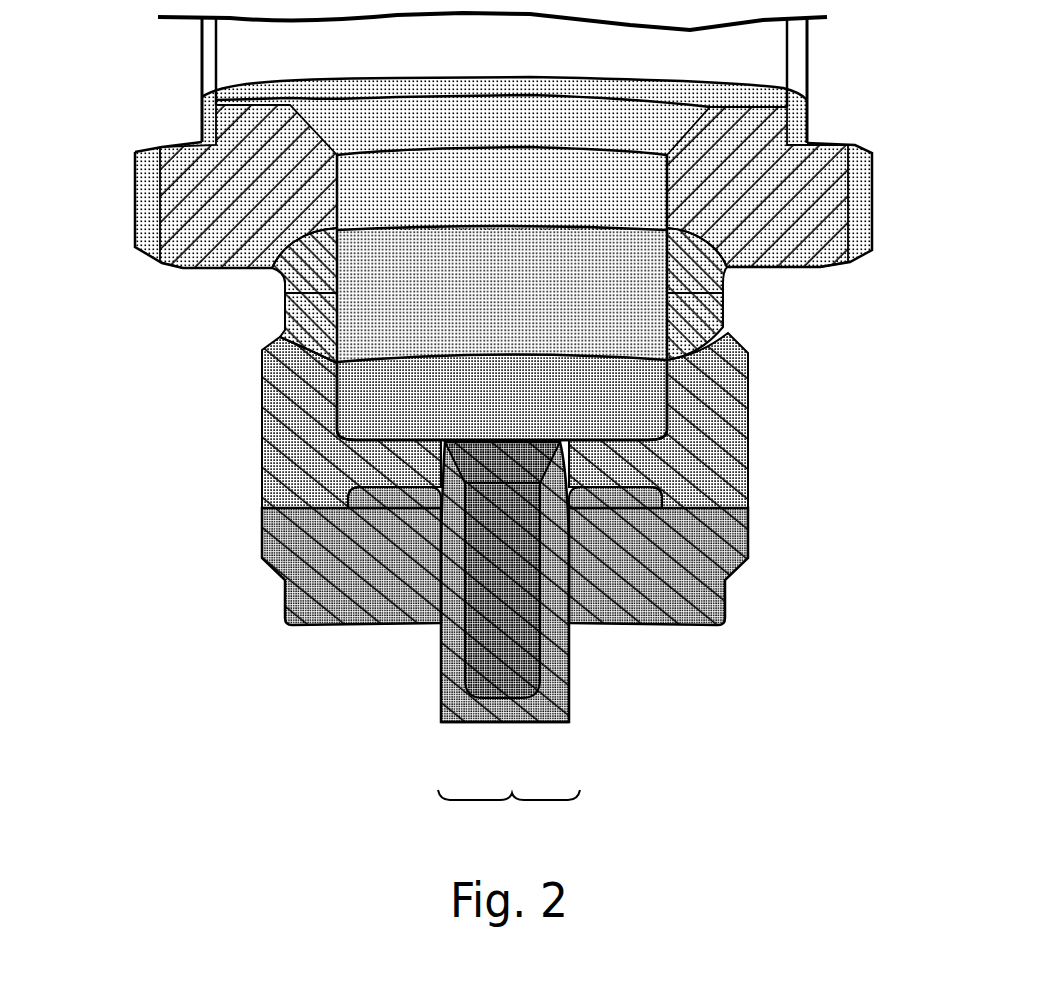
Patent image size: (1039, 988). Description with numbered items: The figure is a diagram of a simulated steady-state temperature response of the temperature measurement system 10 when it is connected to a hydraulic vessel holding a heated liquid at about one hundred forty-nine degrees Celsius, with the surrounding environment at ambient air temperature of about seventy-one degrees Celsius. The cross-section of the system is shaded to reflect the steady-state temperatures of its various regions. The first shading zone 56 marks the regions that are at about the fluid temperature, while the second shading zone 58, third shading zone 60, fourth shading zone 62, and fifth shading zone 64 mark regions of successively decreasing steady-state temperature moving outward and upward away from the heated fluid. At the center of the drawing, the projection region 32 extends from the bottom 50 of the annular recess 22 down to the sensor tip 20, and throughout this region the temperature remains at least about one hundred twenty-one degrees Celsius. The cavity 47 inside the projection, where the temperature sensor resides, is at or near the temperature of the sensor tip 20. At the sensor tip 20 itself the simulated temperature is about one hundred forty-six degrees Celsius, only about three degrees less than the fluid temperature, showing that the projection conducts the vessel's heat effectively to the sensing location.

The temperature measurement system 10 is at (193, 57).
The fifth shading zone 64 is at (886, 208).
The fourth shading zone 62 is at (738, 285).
The third shading zone 60 is at (750, 322).
The second shading zone 58 is at (763, 422).
The first shading zone 56 is at (760, 571).
The bottom of annular recess 50 is at (372, 492).
The annular recess 22 is at (613, 634).
The cavity 47 is at (501, 518).
The sensor tip 20 is at (517, 724).
The projection region 32 is at (509, 809).